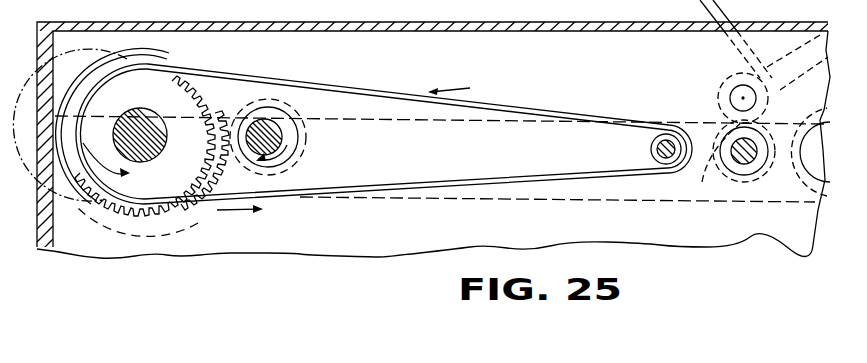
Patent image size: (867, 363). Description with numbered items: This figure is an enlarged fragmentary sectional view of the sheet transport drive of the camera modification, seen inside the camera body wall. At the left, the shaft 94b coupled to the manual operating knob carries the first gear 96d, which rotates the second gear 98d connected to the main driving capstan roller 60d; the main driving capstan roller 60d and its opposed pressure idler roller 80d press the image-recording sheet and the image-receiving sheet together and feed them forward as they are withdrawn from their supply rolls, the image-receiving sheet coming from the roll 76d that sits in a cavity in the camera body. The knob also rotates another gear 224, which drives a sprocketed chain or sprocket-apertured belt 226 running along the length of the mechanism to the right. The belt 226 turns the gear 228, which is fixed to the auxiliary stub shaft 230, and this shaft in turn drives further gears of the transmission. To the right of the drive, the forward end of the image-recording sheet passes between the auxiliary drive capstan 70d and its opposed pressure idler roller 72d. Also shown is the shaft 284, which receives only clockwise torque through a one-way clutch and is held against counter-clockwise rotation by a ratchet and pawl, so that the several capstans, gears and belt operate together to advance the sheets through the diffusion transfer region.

The shaft 94b is at (83, 143).
The roll of image-receiving sheet material 76d is at (96, 237).
The first gear 96d is at (140, 219).
The gear 224 is at (193, 211).
The second gear 98d is at (245, 166).
The sprocketed chain or sprocket-apertured belt 226 is at (443, 187).
The opposed pressure idler roller 80d is at (305, 86).
The main driving capstan roller 60d is at (284, 138).
The opposed pressure idler roller 72d is at (720, 90).
The auxiliary stub shaft 230 is at (667, 140).
The gear 228 is at (648, 153).
The auxiliary drive capstan 70d is at (705, 166).
The shaft 284 is at (738, 165).